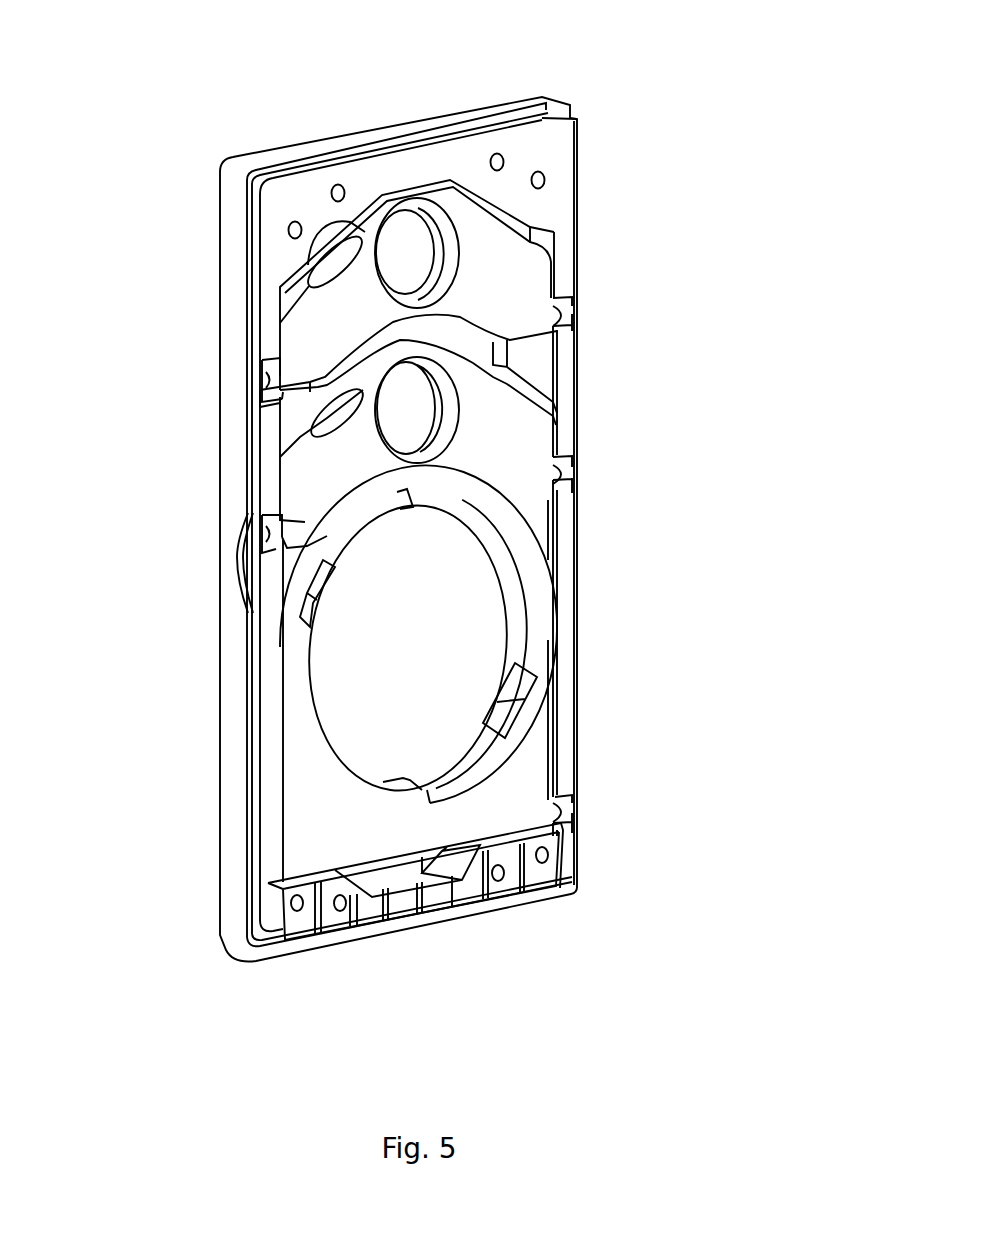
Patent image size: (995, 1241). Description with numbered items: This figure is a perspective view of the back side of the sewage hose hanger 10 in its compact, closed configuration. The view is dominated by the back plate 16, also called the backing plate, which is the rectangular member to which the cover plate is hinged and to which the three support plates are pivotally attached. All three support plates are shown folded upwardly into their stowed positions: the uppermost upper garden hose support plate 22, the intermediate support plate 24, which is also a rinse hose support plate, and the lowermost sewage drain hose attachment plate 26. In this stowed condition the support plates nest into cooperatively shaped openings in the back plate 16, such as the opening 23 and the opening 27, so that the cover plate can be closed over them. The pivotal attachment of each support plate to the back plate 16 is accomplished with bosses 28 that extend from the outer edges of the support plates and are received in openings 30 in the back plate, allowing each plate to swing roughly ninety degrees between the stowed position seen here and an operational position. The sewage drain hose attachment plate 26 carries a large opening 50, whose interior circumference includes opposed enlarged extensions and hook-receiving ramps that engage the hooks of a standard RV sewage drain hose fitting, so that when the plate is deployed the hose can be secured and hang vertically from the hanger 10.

The sewage hose hanger 10 is at (186, 106).
The back plate 16 is at (562, 197).
The upper garden hose support plate 22 is at (310, 323).
The opening 23 is at (427, 240).
The intermediate support plate 24 is at (317, 497).
The sewage drain hose attachment plate 26 is at (300, 753).
The opening 27 is at (400, 402).
The bosses 28 is at (573, 301).
The openings 30 is at (571, 327).
The opening 50 is at (400, 657).